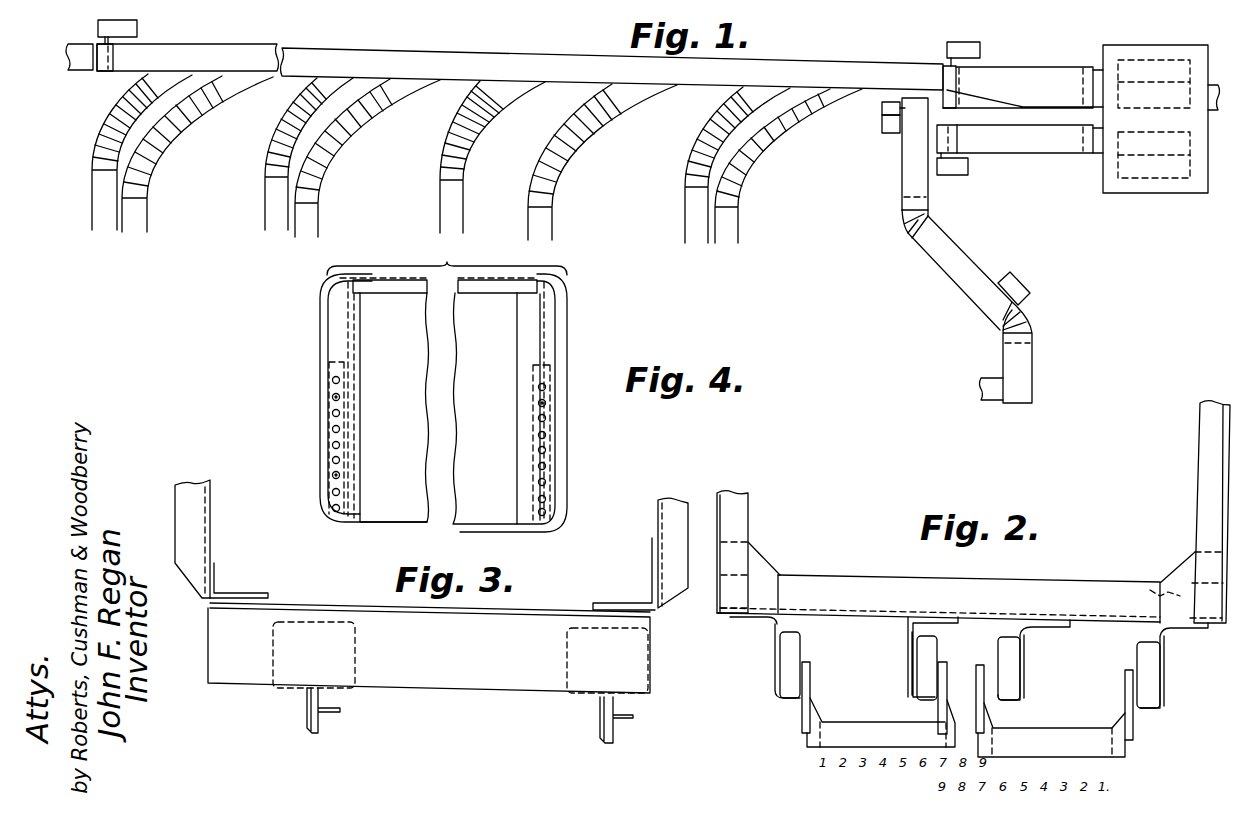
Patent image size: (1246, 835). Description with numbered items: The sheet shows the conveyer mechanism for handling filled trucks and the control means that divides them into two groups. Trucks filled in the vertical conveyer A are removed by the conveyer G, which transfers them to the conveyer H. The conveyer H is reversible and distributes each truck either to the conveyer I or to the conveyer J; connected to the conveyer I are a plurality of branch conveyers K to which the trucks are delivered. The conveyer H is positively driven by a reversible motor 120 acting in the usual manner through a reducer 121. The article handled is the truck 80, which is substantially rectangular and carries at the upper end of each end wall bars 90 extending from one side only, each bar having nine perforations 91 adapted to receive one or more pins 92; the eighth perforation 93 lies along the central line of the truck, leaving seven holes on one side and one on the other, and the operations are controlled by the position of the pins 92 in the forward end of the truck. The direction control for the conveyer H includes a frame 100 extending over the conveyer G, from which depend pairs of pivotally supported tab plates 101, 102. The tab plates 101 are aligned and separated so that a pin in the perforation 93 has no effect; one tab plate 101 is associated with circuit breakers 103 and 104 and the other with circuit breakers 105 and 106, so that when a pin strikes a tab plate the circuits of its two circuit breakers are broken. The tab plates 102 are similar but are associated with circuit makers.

In FIG. 1, the conveyer I is at (855, 76).
In FIG. 1, the branch conveyers K is at (282, 126).
In FIG. 1, the motor 120 is at (884, 108).
In FIG. 1, the reducer 121 is at (893, 132).
In FIG. 1, the conveyer G is at (1013, 138).
In FIG. 1, the vertical conveyer A is at (1143, 187).
In FIG. 1, the conveyer H is at (918, 170).
In FIG. 1, the conveyer J is at (960, 277).
In FIG. 4, the truck 80 is at (446, 402).
In FIG. 4, the bars 90 is at (340, 372).
In FIG. 4, the perforations 91 is at (337, 415).
In FIG. 4, the pins 92 is at (332, 475).
In FIG. 4, the eighth perforation 93 is at (335, 397).
In FIG. 3, the frame 100 is at (657, 523).
In FIG. 2, the frame 100 is at (893, 578).
In FIG. 3, the tab plates 101 is at (617, 737).
In FIG. 2, the tab plates 101 is at (890, 728).
In FIG. 3, the tab plates 102 is at (322, 727).
In FIG. 2, the circuit breaker 103 is at (792, 647).
In FIG. 2, the circuit breaker 104 is at (925, 653).
In FIG. 2, the circuit breaker 105 is at (1015, 650).
In FIG. 2, the circuit breaker 106 is at (1148, 660).